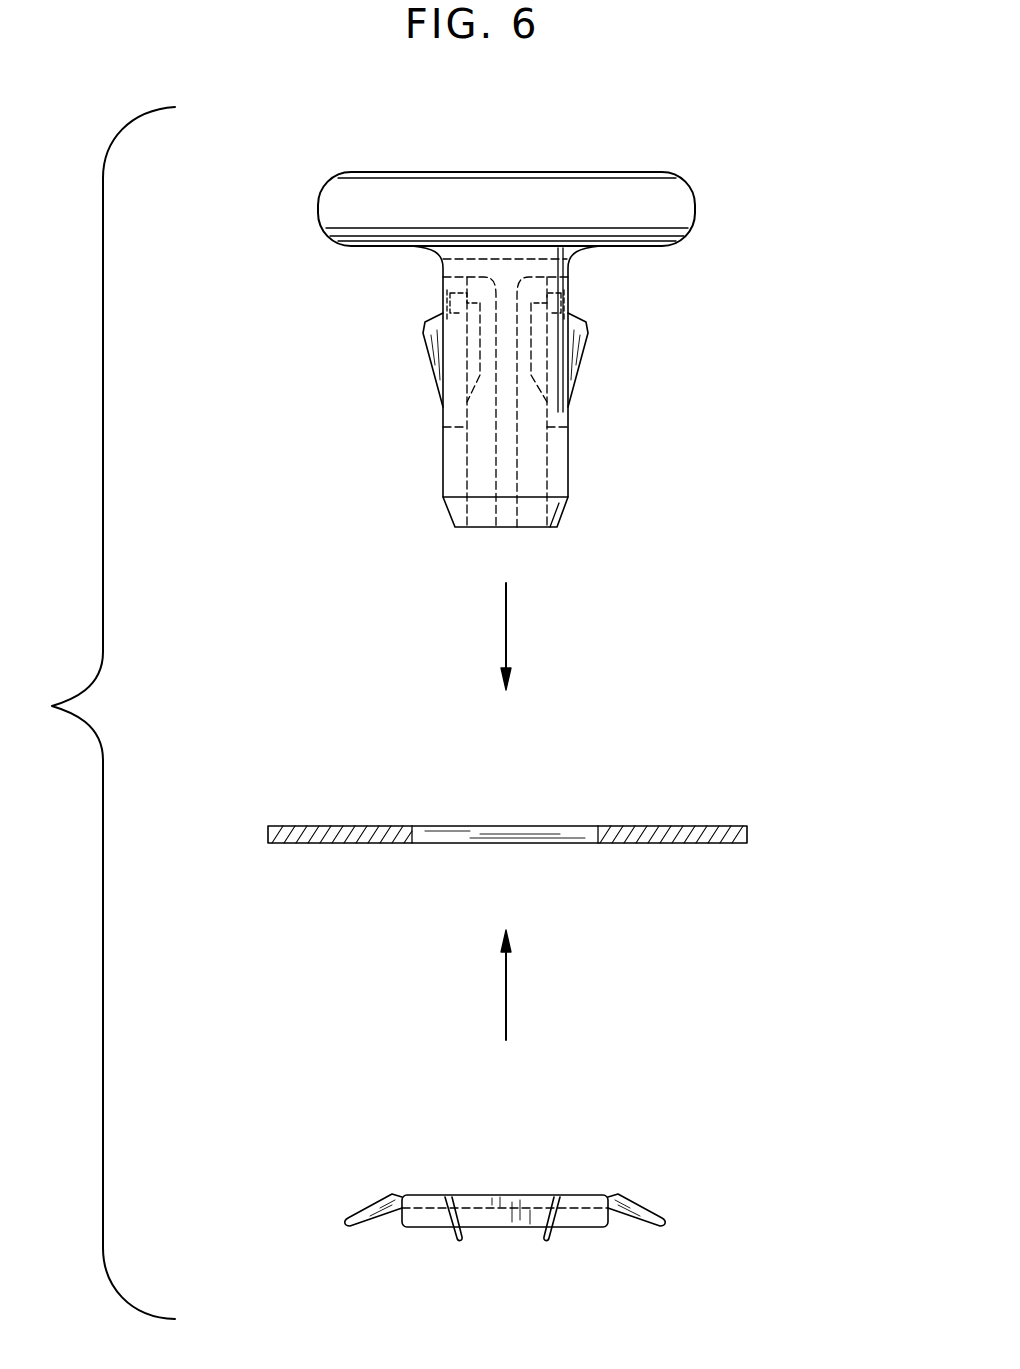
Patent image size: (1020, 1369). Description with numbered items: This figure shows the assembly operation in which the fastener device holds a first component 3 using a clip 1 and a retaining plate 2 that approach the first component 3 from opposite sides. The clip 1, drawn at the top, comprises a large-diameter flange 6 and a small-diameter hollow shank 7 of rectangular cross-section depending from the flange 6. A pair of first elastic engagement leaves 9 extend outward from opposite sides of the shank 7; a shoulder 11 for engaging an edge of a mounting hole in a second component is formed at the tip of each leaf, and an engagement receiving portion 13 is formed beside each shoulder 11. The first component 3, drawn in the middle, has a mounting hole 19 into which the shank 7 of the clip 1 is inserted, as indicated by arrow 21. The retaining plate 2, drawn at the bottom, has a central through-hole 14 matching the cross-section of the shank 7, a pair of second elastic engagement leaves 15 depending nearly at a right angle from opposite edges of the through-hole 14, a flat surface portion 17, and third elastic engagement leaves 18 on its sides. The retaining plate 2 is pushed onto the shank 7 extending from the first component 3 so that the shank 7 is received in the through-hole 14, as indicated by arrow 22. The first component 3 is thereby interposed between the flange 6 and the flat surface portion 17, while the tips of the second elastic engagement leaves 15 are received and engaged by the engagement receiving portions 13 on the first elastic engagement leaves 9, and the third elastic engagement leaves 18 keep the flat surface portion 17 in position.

The clip 1 is at (813, 187).
The retaining plate 2 is at (700, 1179).
The first component 3 is at (722, 826).
The flange 6 is at (338, 212).
The shank 7 is at (455, 450).
The first elastic engagement leaves 9 is at (408, 328).
The shoulder 11 is at (445, 320).
The engagement receiving portion 13 is at (455, 305).
The through-hole 14 is at (512, 1208).
The second elastic engagement leaves 15 is at (457, 1246).
The flat surface portion 17 is at (415, 1195).
The third elastic engagement leaves 18 is at (346, 1218).
The mounting hole 19 is at (596, 826).
The arrow 21 is at (506, 636).
The arrow 22 is at (506, 990).